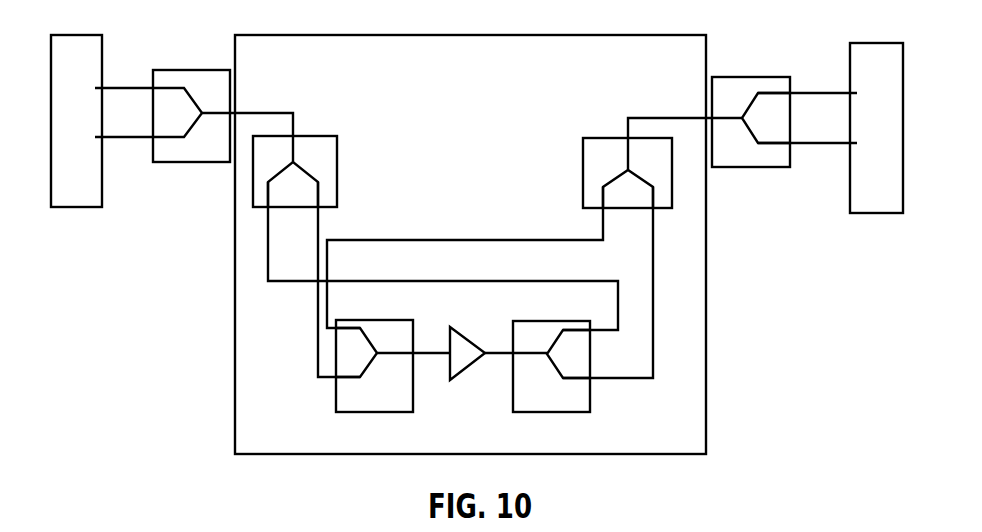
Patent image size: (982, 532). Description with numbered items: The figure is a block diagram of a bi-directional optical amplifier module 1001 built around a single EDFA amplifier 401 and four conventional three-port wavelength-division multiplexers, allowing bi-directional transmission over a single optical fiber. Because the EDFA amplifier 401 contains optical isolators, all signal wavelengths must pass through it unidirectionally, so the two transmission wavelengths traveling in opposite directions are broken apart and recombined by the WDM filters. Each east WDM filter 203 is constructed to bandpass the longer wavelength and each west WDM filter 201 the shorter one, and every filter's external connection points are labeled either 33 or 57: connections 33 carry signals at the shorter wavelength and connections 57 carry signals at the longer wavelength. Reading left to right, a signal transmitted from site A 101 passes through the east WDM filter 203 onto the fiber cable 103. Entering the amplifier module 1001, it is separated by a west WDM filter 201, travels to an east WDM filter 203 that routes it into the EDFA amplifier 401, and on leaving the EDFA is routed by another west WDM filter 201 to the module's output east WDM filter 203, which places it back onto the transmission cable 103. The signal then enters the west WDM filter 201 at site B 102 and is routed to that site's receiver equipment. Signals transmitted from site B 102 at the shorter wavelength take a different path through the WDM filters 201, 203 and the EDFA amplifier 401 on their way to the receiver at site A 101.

The amplifier module 1001 is at (235, 412).
The site A 101 is at (77, 106).
The site B 102 is at (877, 113).
The fiber cable 103 is at (268, 113).
The east WDM filter 203 is at (412, 244).
The west WDM filter 201 is at (521, 248).
The connection carrying 1557 nm signals 57 is at (118, 87).
The connection carrying 1533 nm signals 33 is at (118, 138).
The EDFA amplifier 401 is at (468, 370).